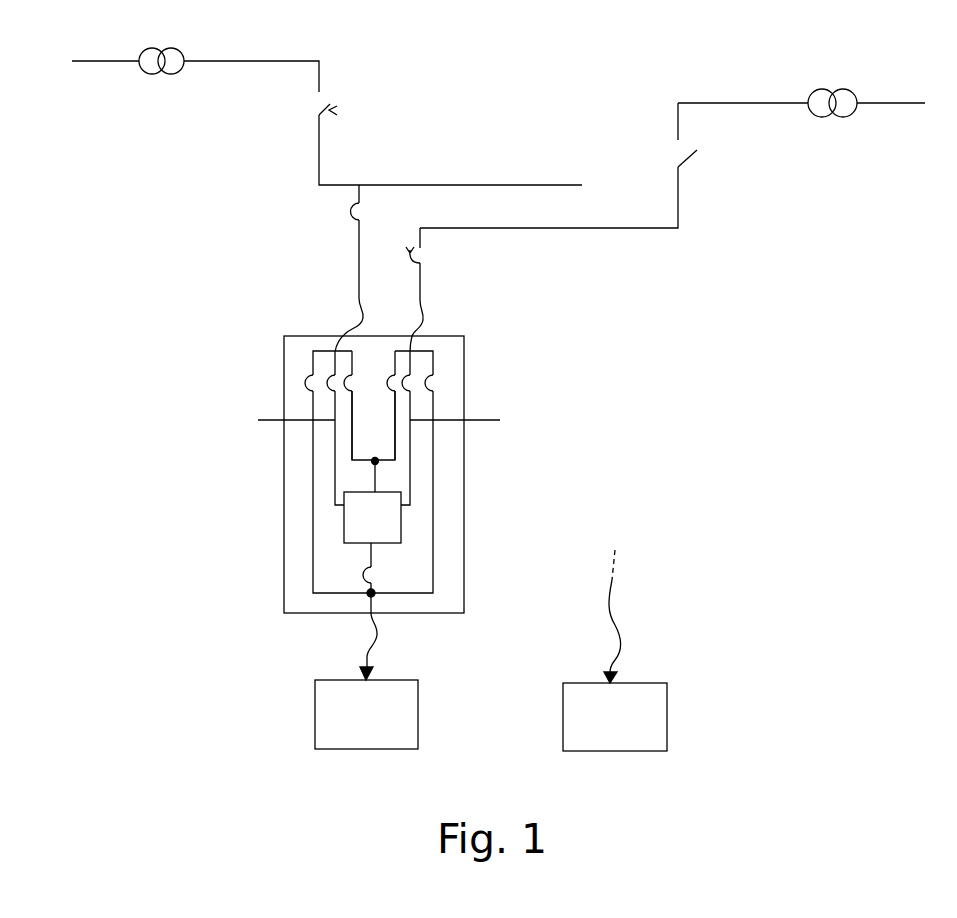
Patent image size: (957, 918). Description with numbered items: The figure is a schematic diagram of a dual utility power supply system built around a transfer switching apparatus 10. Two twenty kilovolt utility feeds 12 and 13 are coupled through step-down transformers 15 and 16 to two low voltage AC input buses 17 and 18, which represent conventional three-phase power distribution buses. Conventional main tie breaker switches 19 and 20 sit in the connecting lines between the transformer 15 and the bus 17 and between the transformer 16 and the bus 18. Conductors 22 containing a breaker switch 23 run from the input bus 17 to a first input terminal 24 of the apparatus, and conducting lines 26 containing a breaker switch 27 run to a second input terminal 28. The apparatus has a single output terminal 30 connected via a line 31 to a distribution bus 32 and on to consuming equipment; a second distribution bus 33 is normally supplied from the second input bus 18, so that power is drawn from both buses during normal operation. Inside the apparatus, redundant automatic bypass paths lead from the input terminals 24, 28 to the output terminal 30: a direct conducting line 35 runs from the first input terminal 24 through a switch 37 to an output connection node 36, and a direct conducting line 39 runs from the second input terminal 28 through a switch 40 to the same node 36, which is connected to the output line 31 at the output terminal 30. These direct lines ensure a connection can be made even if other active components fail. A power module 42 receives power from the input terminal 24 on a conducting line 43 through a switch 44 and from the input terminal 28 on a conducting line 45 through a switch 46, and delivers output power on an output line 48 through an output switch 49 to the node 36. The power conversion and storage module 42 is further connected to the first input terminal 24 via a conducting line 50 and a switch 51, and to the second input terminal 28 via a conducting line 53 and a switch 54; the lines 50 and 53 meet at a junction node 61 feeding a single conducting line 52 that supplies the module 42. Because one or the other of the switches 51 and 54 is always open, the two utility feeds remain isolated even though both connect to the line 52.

The transfer switching apparatus 10 is at (464, 515).
The utility feed 12 is at (108, 58).
The utility feed 13 is at (890, 102).
The step-down transformer 15 is at (173, 75).
The step-down transformer 16 is at (829, 118).
The AC input bus 17 is at (484, 186).
The AC input bus 18 is at (545, 229).
The main tie breaker switch 19 is at (338, 110).
The main tie breaker switch 20 is at (690, 160).
The conductors 22 is at (357, 264).
The breaker switch 23 is at (350, 212).
The first input terminal 24 is at (342, 332).
The conducting lines 26 is at (420, 283).
The breaker switch 27 is at (398, 243).
The second input terminal 28 is at (418, 330).
The output terminal 30 is at (368, 615).
The output line 31 is at (360, 654).
The distribution bus 32 is at (315, 713).
The distribution bus 33 is at (668, 713).
The direct conducting line 35 is at (313, 458).
The output connection node 36 is at (373, 595).
The switch 37 is at (305, 383).
The direct conducting line 39 is at (437, 462).
The switch 40 is at (433, 383).
The power module 42 is at (401, 528).
The conducting line 43 is at (284, 421).
The switch 44 is at (328, 380).
The conducting line 45 is at (471, 421).
The switch 46 is at (410, 378).
The output line 48 is at (371, 558).
The output switch 49 is at (358, 575).
The conducting line 50 is at (352, 427).
The switch 51 is at (353, 368).
The conducting line 52 is at (372, 477).
The conducting line 53 is at (397, 417).
The switch 54 is at (393, 373).
The junction node 61 is at (376, 463).